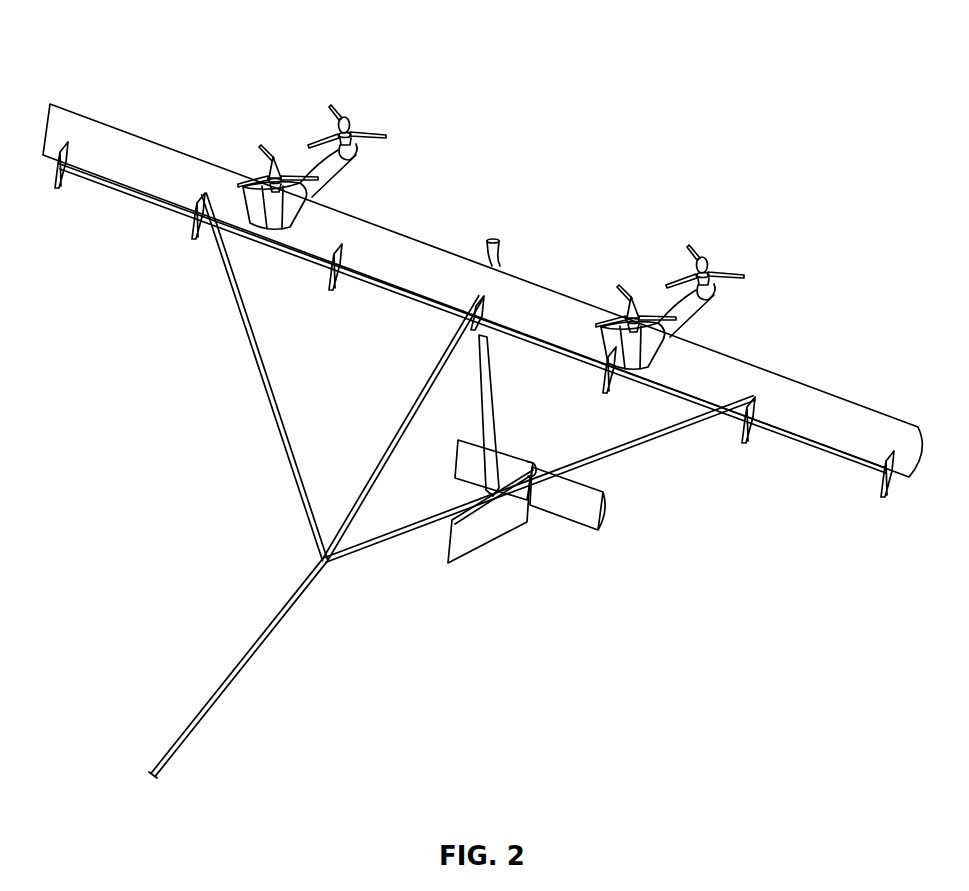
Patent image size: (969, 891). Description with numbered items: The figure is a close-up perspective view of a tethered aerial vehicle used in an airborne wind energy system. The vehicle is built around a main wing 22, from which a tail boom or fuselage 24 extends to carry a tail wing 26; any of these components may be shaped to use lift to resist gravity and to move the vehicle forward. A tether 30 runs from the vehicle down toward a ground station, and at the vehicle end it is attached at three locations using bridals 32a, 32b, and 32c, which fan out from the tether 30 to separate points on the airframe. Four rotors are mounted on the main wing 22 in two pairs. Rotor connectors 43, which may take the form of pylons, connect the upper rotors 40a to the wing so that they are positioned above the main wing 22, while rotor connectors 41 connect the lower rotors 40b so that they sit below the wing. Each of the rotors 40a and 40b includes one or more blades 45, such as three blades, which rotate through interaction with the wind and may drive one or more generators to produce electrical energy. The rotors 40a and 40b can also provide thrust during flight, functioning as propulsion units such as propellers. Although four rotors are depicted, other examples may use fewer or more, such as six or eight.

The main wing 22 is at (826, 415).
The tail boom or fuselage 24 is at (493, 402).
The tail wing 26 is at (508, 520).
The tether 30 is at (257, 647).
The bridal 32a is at (265, 380).
The bridal 32b is at (413, 402).
The bridal 32c is at (410, 532).
The upper rotor 40a is at (270, 158).
The lower rotor 40b is at (338, 110).
The rotor connector 41 is at (348, 165).
The rotor connector 43 is at (257, 210).
The rotor blade 45 is at (378, 135).